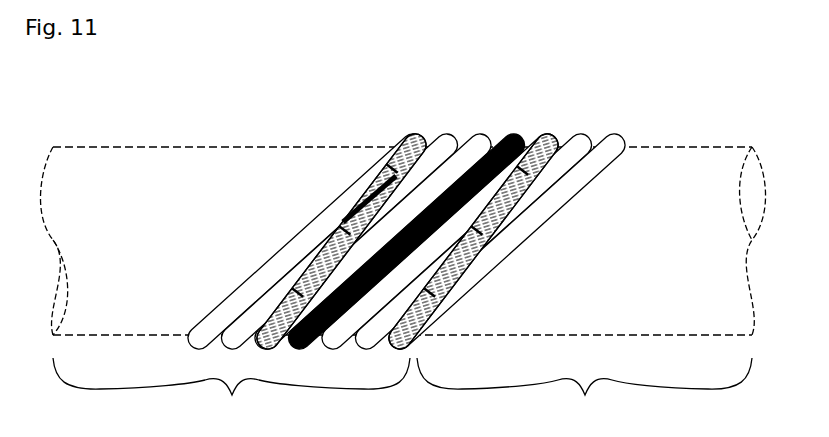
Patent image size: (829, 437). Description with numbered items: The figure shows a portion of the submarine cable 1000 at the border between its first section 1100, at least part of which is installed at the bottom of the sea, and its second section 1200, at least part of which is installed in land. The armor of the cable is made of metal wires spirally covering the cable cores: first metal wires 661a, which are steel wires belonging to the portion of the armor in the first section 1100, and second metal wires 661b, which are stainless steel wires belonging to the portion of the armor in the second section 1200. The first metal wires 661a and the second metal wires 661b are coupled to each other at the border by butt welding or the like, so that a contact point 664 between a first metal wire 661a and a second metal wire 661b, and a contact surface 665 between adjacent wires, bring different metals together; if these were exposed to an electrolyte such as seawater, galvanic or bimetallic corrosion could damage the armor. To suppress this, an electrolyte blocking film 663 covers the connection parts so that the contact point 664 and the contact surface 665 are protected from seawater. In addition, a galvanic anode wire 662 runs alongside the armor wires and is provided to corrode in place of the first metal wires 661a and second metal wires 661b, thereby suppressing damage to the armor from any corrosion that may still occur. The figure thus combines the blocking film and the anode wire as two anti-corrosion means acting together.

The submarine cable 1000 is at (198, 118).
The first metal wires 661a is at (297, 250).
The second metal wires 661b is at (543, 212).
The galvanic anode wire 662 is at (516, 134).
The electrolyte blocking film 663 is at (485, 273).
The contact point 664 is at (395, 153).
The contact surface 665 is at (360, 203).
The first section 1100 is at (231, 388).
The second section 1200 is at (584, 388).